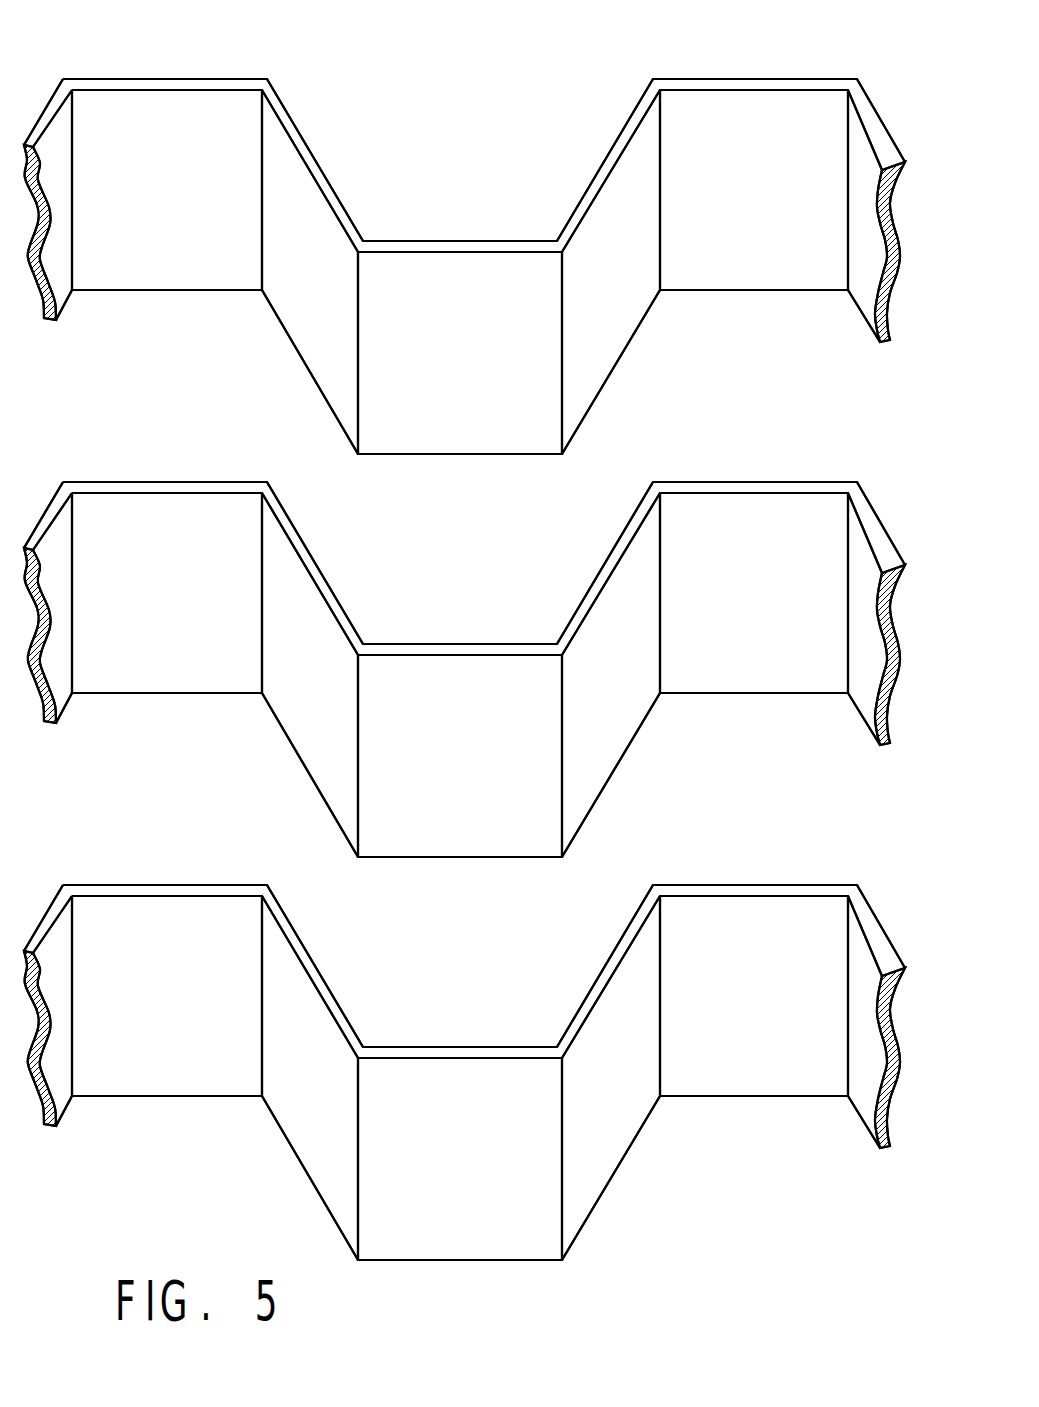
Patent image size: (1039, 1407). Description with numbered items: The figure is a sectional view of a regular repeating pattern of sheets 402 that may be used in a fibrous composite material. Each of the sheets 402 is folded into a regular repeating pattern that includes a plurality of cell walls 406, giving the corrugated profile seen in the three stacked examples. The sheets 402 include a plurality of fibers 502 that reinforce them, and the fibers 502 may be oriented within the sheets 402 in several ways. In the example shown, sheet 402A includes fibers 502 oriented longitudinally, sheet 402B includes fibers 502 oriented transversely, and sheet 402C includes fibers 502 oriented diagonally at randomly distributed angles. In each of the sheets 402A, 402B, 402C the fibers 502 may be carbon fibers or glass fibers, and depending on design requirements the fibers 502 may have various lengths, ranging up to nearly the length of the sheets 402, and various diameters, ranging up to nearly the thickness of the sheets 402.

The sheets 402 is at (165, 52).
The sheet 402A is at (780, 62).
The sheet 402B is at (780, 452).
The sheet 402C is at (776, 865).
The cell walls 406 is at (670, 70).
The fibers 502 is at (457, 265).